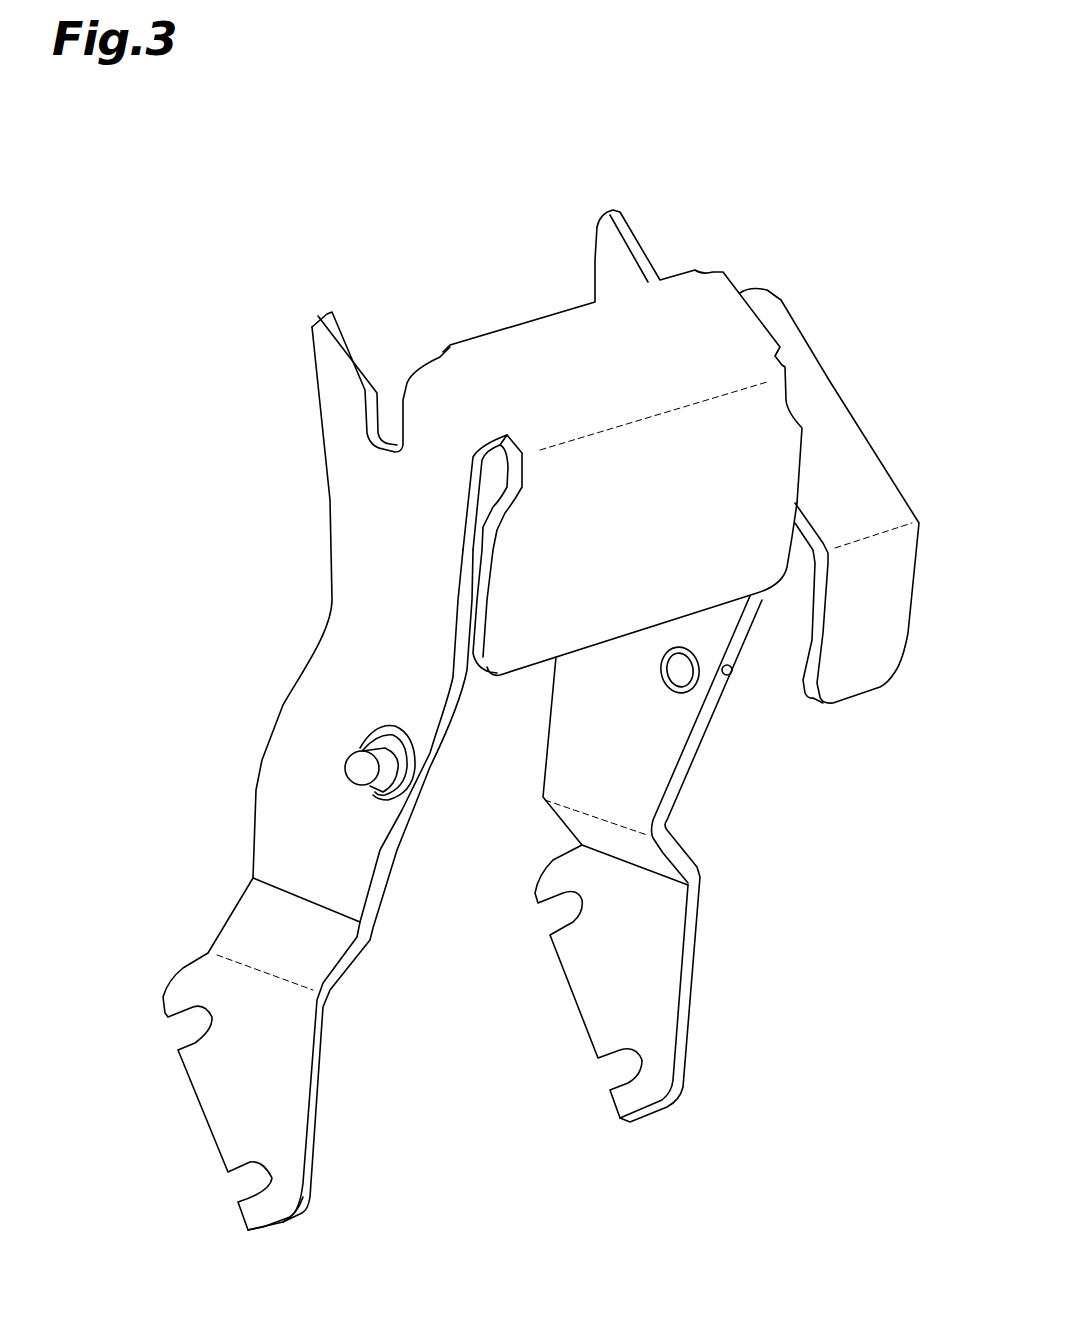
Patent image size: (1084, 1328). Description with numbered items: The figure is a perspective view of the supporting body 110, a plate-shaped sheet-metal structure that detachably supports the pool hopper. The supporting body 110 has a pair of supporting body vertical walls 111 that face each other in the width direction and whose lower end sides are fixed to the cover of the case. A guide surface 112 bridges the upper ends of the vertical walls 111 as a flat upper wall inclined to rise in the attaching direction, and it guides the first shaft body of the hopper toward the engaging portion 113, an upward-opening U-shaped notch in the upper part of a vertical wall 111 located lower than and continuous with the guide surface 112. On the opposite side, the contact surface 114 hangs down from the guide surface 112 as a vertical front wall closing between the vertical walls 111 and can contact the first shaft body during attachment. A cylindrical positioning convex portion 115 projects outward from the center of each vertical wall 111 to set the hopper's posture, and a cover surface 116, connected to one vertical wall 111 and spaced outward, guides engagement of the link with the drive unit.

The supporting body 110 is at (214, 210).
The supporting body vertical walls 111 is at (368, 545).
The guide surface 112 is at (530, 350).
The engaging portion 113 is at (390, 440).
The contact surface 114 is at (733, 570).
The positioning convex portion 115 is at (360, 768).
The cover surface 116 is at (858, 462).